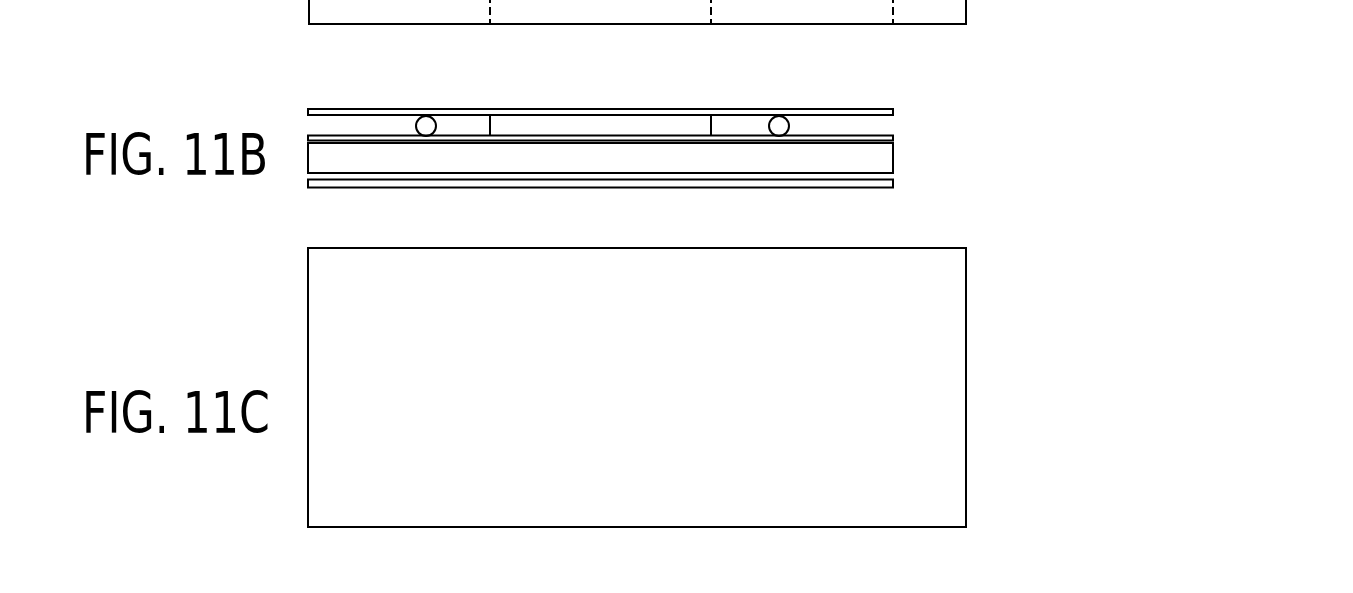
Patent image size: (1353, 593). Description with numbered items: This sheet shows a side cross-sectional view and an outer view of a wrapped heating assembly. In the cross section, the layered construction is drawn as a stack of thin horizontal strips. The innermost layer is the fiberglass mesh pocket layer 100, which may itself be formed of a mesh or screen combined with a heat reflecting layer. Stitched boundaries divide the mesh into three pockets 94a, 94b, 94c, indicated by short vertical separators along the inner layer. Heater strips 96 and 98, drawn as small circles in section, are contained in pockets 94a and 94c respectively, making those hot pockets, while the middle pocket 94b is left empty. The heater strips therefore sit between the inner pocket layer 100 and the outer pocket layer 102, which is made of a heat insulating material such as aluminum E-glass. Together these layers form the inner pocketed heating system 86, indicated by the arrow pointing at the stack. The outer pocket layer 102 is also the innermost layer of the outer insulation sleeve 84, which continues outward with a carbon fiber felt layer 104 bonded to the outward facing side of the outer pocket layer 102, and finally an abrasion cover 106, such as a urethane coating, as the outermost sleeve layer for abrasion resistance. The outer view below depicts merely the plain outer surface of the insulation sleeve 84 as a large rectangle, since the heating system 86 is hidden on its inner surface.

In FIG. 11C, the outer insulation sleeve 84 is at (343, 529).
In FIG. 11B, the inner pocketed heating system 86 is at (764, 175).
In FIG. 11B, the pocket 94a is at (314, 127).
In FIG. 11B, the pocket 94b is at (610, 128).
In FIG. 11B, the pocket 94c is at (851, 127).
In FIG. 11B, the heater strip 96 is at (426, 116).
In FIG. 11B, the heater strip 98 is at (779, 116).
In FIG. 11B, the fiberglass mesh pocket layer 100 is at (893, 115).
In FIG. 11B, the outer pocket layer 102 is at (893, 137).
In FIG. 11B, the carbon fiber layer 104 is at (893, 153).
In FIG. 11B, the abrasion cover 106 is at (893, 181).